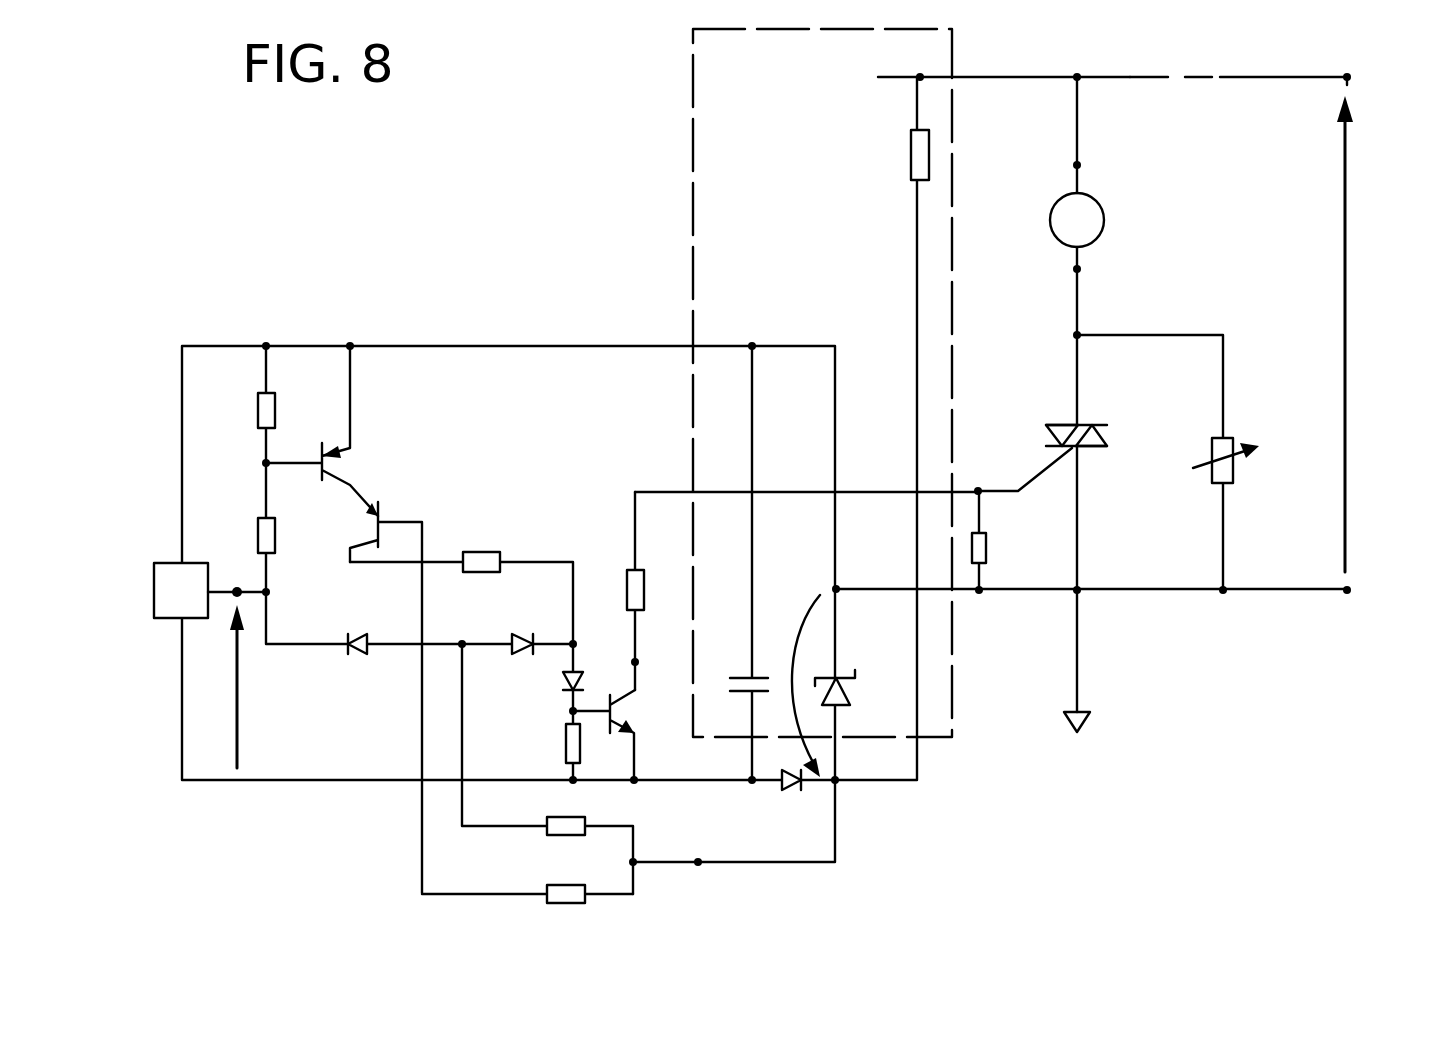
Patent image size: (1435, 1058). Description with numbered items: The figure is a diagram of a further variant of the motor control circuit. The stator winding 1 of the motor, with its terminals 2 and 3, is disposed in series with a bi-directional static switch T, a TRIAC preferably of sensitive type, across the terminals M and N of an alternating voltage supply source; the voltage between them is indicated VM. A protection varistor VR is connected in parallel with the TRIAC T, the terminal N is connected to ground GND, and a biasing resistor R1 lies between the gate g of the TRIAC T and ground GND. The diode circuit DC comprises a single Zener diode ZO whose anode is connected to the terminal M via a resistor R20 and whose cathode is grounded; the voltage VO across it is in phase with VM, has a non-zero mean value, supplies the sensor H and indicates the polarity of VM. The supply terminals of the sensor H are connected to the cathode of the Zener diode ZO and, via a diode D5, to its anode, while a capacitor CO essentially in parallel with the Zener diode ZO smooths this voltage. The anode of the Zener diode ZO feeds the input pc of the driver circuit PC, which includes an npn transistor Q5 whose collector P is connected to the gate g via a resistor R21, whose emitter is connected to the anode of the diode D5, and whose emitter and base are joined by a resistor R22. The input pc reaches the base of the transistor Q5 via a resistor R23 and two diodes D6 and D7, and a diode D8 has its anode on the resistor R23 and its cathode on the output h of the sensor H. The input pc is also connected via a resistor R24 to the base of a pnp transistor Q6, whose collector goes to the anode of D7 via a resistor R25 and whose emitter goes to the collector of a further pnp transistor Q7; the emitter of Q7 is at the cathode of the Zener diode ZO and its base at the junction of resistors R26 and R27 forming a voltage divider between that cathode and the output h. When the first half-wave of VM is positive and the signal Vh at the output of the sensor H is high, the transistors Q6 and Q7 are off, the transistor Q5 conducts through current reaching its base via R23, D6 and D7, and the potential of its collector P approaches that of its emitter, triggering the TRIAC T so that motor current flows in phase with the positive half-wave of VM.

The stator winding 1 is at (1104, 212).
The winding terminal 2 is at (1080, 165).
The winding terminal 3 is at (1077, 269).
The supply terminal M is at (1350, 78).
The supply terminal N is at (1350, 592).
The alternating supply voltage VM is at (1348, 238).
The bi-directional static switch T is at (1088, 440).
The gate g is at (1040, 474).
The protection varistor VR is at (1212, 480).
The biasing resistor R1 is at (984, 553).
The ground GND is at (1088, 718).
The diode circuit DC is at (822, 30).
The resistor R20 is at (912, 162).
The Zener diode ZO is at (850, 692).
The Zener diode voltage VO is at (806, 668).
The capacitor CO is at (746, 678).
The driver circuit PC is at (497, 395).
The collector of transistor Q5 P is at (640, 662).
The resistor R21 is at (628, 584).
The npn transistor Q5 is at (618, 714).
The diode D7 is at (578, 670).
The resistor R22 is at (566, 750).
The diode D6 is at (520, 640).
The resistor R25 is at (480, 552).
The pnp transistor Q7 is at (374, 458).
The pnp transistor Q6 is at (350, 550).
The voltage divider resistor R26 is at (258, 420).
The voltage divider resistor R27 is at (258, 536).
The diode D8 is at (352, 655).
The sensor H is at (170, 608).
The sensor output h is at (237, 590).
The sensor output signal Vh is at (240, 688).
The resistor R23 is at (562, 826).
The resistor R24 is at (564, 893).
The driver circuit input pc is at (698, 860).
The diode D5 is at (796, 790).